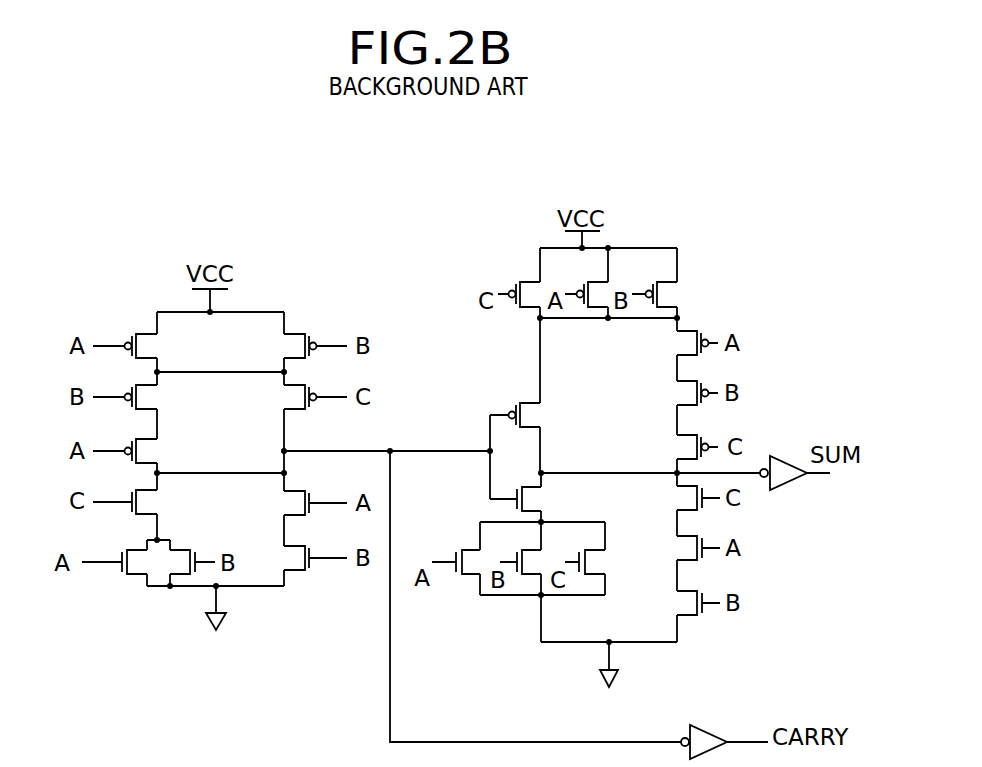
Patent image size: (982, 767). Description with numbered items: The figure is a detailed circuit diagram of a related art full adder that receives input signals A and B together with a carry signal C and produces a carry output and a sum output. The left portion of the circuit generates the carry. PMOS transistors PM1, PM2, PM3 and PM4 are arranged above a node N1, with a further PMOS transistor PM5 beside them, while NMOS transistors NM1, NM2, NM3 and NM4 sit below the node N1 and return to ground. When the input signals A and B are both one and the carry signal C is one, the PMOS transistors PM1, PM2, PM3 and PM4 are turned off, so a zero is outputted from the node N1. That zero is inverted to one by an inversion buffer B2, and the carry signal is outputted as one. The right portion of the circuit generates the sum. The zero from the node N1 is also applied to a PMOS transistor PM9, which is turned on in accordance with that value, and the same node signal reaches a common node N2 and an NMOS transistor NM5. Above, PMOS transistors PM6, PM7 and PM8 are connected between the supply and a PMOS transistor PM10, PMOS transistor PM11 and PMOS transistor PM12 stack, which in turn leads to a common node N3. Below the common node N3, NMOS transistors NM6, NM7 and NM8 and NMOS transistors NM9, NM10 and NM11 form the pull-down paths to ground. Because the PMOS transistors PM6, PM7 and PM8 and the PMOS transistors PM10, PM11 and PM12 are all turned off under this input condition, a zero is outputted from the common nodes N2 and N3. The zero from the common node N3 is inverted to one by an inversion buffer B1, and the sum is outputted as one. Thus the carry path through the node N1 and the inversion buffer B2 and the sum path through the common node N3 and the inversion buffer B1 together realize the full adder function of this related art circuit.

The PMOS transistor PM1 is at (151, 346).
The PMOS transistor PM2 is at (289, 346).
The PMOS transistor PM3 is at (152, 397).
The PMOS transistor PM4 is at (292, 397).
The PMOS transistor PM5 is at (152, 451).
The PMOS transistor PM6 is at (514, 280).
The PMOS transistor PM7 is at (581, 280).
The PMOS transistor PM8 is at (649, 280).
The PMOS transistor PM9 is at (540, 416).
The PMOS transistor PM10 is at (665, 343).
The PMOS transistor PM11 is at (666, 393).
The PMOS transistor PM12 is at (664, 447).
The NMOS transistor NM1 is at (114, 575).
The NMOS transistor NM2 is at (198, 549).
The NMOS transistor NM3 is at (288, 504).
The NMOS transistor NM4 is at (315, 573).
The NMOS transistor NM5 is at (542, 498).
The NMOS transistor NM6 is at (453, 549).
The NMOS transistor NM7 is at (514, 549).
The NMOS transistor NM8 is at (576, 549).
The NMOS transistor NM9 is at (672, 498).
The NMOS transistor NM10 is at (666, 548).
The NMOS transistor NM11 is at (669, 603).
The inversion buffer B1 is at (795, 459).
The inversion buffer B2 is at (579, 605).
The node N1 is at (390, 438).
The common node N2 is at (472, 439).
The common node N3 is at (556, 459).